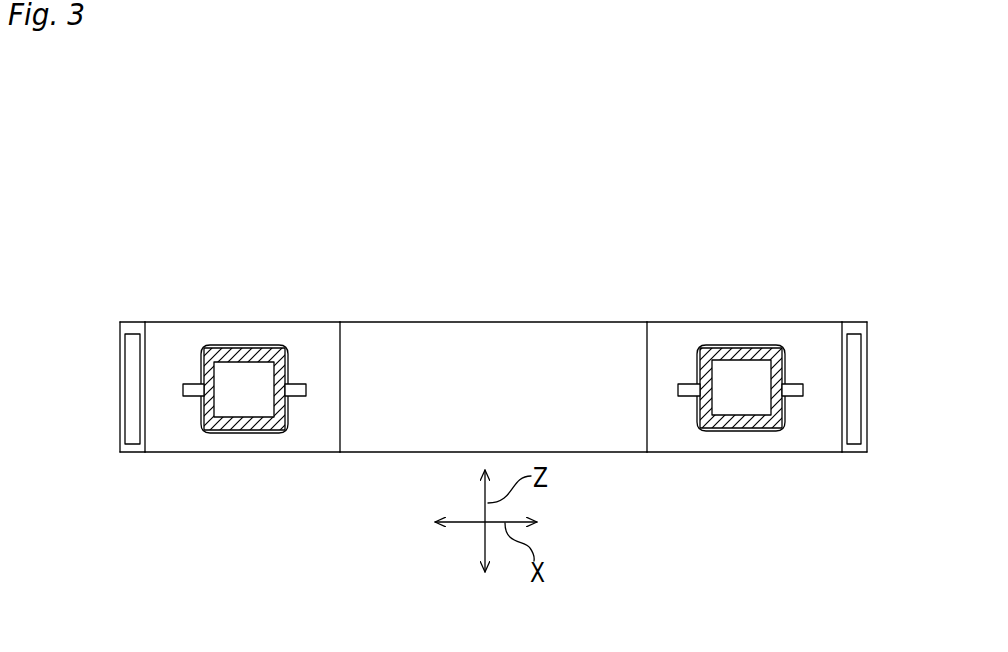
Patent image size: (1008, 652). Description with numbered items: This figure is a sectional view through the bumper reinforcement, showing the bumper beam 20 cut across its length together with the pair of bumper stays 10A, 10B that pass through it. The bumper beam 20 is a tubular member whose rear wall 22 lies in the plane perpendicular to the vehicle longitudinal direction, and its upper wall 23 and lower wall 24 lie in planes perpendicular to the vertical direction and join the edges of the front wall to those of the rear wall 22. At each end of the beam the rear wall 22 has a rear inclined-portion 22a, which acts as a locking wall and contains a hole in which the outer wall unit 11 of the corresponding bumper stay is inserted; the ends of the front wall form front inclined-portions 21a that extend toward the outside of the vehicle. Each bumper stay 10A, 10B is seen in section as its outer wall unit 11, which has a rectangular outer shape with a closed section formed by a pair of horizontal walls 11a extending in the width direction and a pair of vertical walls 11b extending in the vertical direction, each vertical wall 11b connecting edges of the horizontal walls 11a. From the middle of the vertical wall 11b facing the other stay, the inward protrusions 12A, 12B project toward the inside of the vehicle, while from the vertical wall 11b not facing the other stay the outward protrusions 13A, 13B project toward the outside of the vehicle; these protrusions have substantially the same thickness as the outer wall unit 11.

The bumper stay 10A is at (212, 342).
The bumper stay 10B is at (775, 342).
The outer wall unit 11 is at (275, 435).
The horizontal wall 11a is at (250, 355).
The vertical wall 11b is at (205, 410).
The inward protrusion 12A is at (290, 384).
The inward protrusion 12B is at (699, 383).
The outward protrusion 13A is at (200, 384).
The outward protrusion 13B is at (786, 384).
The bumper beam 20 is at (428, 316).
The front inclined-portion 21a is at (121, 392).
The rear wall 22 is at (478, 335).
The rear inclined-portion 22a is at (270, 328).
The upper wall 23 is at (131, 328).
The lower wall 24 is at (133, 448).